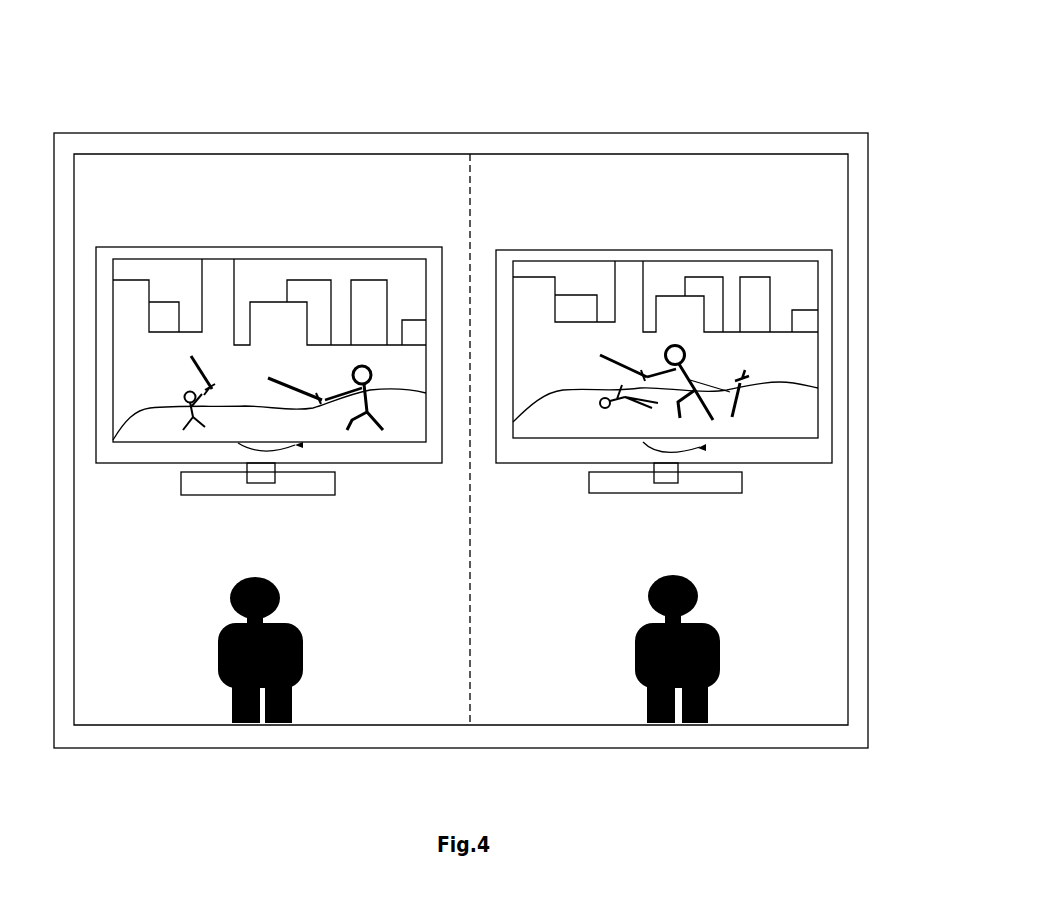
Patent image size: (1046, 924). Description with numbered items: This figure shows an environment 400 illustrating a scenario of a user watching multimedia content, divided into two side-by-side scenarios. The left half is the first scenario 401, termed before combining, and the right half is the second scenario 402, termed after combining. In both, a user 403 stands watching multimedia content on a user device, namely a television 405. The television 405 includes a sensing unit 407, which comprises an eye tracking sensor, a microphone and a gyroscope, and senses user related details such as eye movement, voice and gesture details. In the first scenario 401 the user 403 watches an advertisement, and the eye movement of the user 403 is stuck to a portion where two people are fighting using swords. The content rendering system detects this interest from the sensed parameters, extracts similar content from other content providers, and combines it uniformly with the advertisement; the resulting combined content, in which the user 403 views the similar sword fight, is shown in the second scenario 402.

The environment 400 is at (809, 51).
The first scenario 401 is at (270, 234).
The second scenario 402 is at (672, 226).
The user 403 is at (327, 601).
The television 405 is at (360, 259).
The sensing unit 407 is at (300, 445).